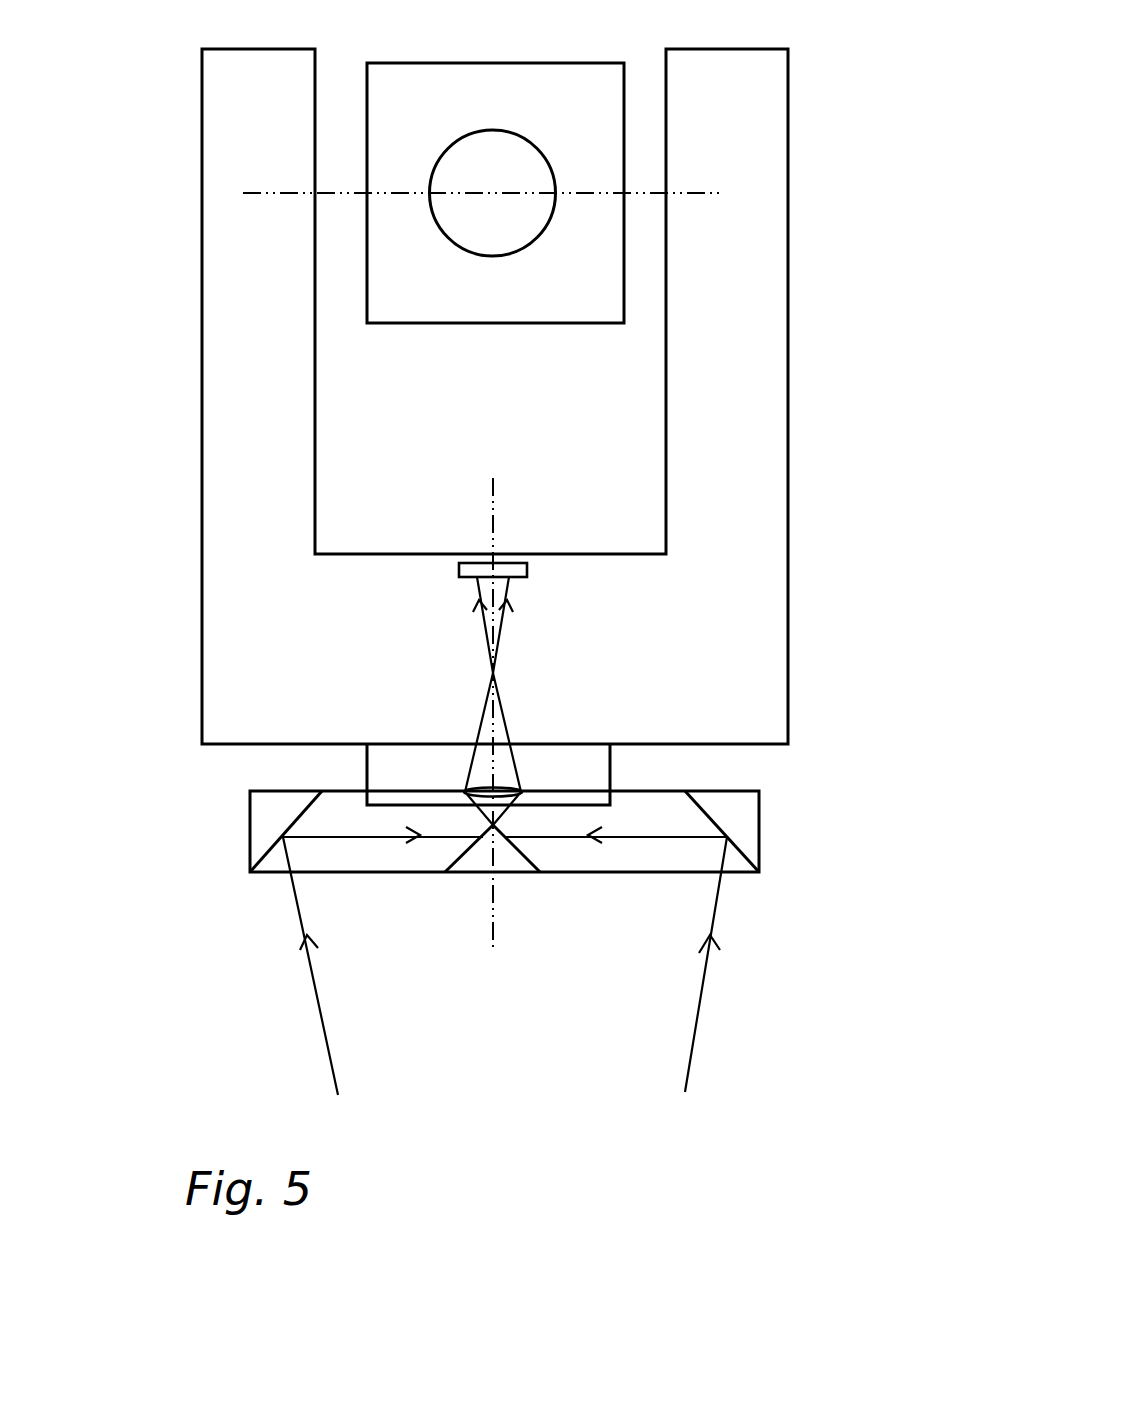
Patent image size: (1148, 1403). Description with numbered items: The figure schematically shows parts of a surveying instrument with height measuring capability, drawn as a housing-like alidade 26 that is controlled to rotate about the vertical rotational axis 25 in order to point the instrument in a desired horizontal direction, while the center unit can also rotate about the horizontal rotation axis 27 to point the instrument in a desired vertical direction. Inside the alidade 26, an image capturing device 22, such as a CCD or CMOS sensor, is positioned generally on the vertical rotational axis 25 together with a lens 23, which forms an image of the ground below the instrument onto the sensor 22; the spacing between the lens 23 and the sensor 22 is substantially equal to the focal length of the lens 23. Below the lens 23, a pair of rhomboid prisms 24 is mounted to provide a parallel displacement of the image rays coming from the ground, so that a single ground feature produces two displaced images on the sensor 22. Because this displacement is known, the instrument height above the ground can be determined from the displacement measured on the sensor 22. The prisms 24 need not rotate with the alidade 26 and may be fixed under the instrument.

The image capturing device 22 is at (484, 565).
The lens 23 is at (497, 792).
The rhomboid prisms 24 is at (329, 816).
The vertical rotational axis 25 is at (493, 908).
The alidade 26 is at (700, 655).
The horizontal rotation axis 27 is at (287, 192).